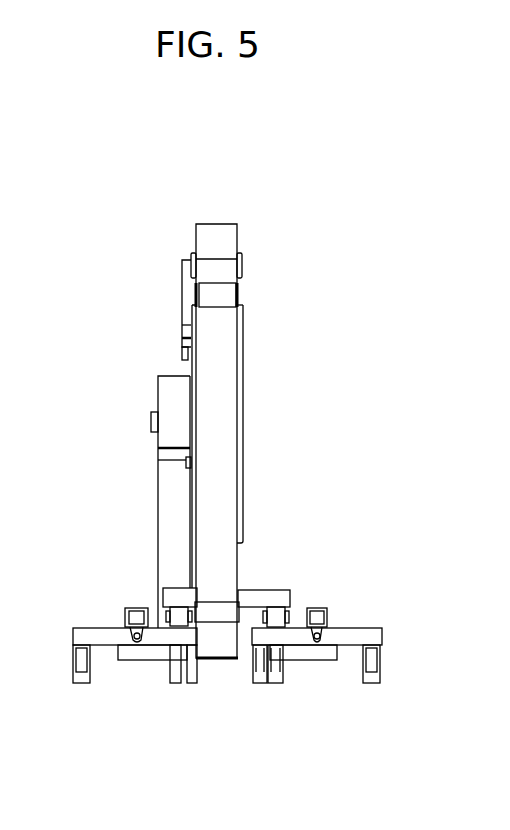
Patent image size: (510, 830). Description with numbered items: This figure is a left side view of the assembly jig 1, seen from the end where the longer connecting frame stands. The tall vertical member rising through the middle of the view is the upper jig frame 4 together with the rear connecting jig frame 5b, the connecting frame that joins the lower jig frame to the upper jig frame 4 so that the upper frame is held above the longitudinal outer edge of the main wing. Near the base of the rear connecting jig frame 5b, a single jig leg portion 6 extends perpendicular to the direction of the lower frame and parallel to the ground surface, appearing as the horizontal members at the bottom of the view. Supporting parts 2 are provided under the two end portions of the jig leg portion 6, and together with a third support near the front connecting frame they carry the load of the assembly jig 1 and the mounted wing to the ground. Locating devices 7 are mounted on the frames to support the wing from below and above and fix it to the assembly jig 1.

The assembly jig 1 is at (304, 168).
The supporting parts 2 is at (66, 696).
The upper jig frame 4 is at (232, 236).
The rear connecting jig frame 5b is at (230, 557).
The jig leg portion 6 is at (307, 650).
The locating devices 7 is at (292, 595).